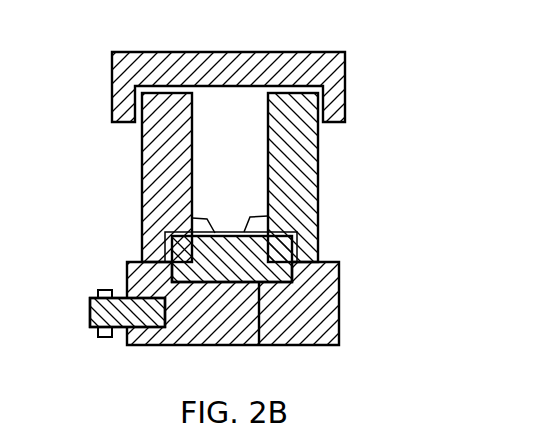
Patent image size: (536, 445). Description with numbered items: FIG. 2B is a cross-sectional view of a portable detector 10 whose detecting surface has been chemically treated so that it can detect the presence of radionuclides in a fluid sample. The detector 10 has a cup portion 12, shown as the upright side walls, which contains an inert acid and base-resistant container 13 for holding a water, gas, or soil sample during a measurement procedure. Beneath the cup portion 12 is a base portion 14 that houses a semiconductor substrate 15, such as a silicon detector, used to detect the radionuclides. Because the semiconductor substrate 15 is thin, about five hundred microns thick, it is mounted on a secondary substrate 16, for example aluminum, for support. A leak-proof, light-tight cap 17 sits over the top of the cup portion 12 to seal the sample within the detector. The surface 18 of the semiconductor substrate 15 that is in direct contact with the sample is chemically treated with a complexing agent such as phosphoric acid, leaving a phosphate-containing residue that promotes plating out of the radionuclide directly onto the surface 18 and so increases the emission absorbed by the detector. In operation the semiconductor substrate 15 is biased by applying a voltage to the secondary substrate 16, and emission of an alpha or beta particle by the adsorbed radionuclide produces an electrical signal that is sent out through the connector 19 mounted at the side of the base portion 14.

The portable detector 10 is at (56, 28).
The cup portion 12 is at (336, 194).
The container 13 is at (183, 142).
The base portion 14 is at (323, 310).
The semiconductor substrate 15 is at (218, 233).
The secondary substrate 16 is at (263, 273).
The cap 17 is at (345, 95).
The surface 18 is at (267, 217).
The connector 19 is at (98, 311).